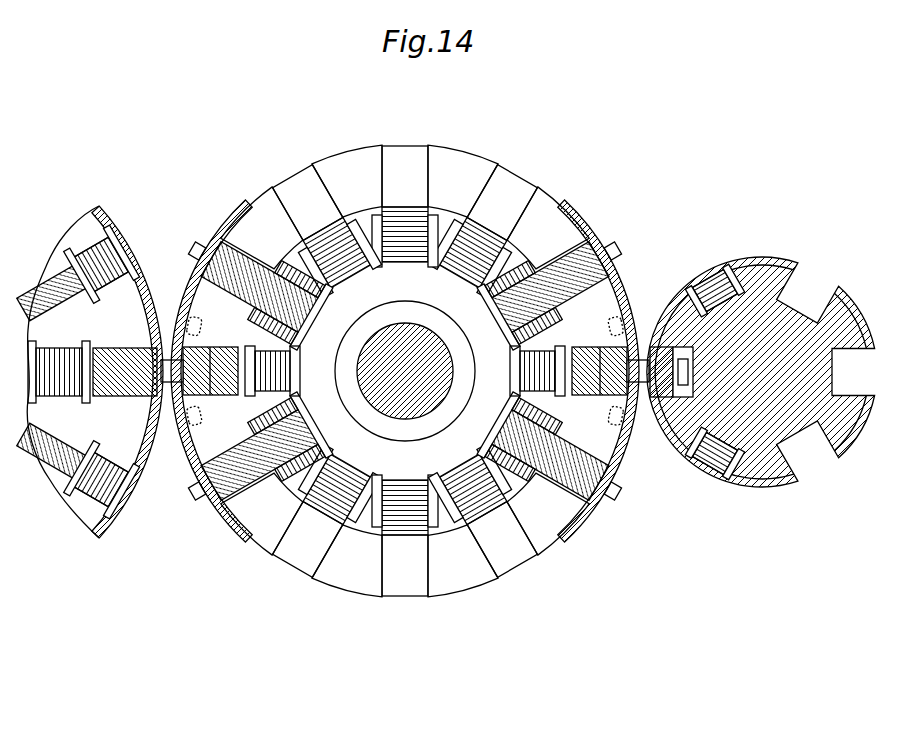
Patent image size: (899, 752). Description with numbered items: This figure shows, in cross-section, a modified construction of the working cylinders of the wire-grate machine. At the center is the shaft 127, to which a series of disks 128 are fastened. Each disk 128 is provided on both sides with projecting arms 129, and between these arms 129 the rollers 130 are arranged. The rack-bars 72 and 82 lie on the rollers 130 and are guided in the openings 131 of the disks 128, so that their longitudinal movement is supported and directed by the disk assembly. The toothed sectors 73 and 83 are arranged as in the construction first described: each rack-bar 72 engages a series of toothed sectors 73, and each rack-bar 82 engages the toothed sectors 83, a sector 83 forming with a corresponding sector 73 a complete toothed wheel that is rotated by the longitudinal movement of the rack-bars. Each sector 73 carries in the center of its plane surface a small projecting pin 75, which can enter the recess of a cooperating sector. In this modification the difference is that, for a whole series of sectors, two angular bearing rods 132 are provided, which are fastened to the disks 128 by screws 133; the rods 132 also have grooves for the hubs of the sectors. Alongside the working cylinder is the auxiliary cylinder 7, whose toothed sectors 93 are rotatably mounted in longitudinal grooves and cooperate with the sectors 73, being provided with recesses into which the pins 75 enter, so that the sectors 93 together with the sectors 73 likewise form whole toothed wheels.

The auxiliary cylinder 7 is at (761, 362).
The rack-bar 72 is at (547, 289).
The toothed-sector 73 is at (261, 274).
The projecting pin 75 is at (182, 248).
The rack-bar 82 is at (92, 358).
The toothed-sector 83 is at (81, 271).
The toothed sector 93 is at (707, 467).
The shaft 127 is at (405, 347).
The disk 128 is at (405, 362).
The projecting arm 129 is at (421, 483).
The roller 130 is at (323, 229).
The opening 131 is at (405, 371).
The angular bearing rod 132 is at (419, 355).
The screw 133 is at (427, 344).